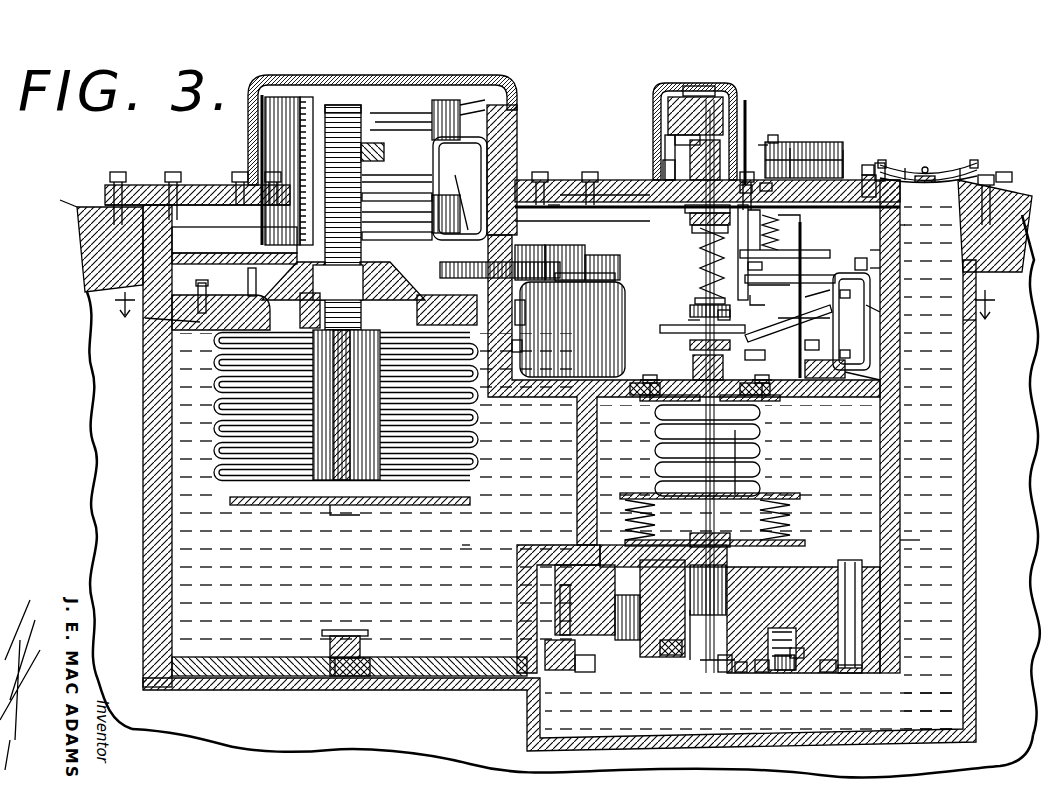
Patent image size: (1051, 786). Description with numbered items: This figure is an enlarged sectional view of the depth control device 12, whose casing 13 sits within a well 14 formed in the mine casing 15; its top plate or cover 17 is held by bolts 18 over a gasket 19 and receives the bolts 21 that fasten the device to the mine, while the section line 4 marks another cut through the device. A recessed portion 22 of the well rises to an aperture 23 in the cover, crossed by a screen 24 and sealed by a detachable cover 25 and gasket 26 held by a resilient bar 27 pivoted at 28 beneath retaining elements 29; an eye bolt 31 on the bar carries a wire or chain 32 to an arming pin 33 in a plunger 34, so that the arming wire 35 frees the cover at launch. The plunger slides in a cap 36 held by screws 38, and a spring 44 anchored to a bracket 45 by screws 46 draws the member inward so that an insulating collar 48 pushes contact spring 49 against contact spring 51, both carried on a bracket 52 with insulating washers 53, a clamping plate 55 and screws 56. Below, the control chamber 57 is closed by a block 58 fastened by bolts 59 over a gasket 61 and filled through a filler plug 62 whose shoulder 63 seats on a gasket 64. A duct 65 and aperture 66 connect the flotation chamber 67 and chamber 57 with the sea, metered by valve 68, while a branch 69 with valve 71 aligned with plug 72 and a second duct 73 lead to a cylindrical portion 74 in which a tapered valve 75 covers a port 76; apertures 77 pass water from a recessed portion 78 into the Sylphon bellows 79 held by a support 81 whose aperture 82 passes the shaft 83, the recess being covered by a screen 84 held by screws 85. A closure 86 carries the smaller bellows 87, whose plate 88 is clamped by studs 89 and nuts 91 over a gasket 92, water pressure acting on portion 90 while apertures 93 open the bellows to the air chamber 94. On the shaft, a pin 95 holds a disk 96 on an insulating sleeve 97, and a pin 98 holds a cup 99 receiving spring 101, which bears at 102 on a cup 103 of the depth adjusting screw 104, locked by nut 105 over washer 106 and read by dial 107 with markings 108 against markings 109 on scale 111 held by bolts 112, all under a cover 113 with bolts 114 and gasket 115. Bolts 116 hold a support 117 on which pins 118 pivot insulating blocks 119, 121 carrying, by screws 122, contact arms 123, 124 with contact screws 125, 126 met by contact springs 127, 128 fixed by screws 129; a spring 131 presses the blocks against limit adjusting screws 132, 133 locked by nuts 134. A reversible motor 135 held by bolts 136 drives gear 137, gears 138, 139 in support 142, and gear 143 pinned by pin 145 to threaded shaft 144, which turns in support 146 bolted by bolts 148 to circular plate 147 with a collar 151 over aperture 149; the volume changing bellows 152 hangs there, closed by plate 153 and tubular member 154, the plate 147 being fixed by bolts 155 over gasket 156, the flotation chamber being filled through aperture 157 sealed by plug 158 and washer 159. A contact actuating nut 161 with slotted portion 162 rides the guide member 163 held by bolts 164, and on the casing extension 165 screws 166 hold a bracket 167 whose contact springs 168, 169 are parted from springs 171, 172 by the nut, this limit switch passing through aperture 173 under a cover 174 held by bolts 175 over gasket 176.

The section line 4 is at (555, 295).
The depth control device 12 is at (179, 474).
The casing 13 is at (902, 496).
The well 14 is at (535, 702).
The mine casing 15 is at (87, 212).
The top plate or cover 17 is at (205, 185).
The bolts 18 is at (175, 172).
The gasket 19 is at (150, 185).
The bolts 21 is at (112, 160).
The recessed portion 22 is at (980, 683).
The aperture 23 is at (940, 168).
The screen or perforated plate 24 is at (905, 168).
The detachable cover 25 is at (960, 170).
The gasket 26 is at (1002, 172).
The resilient bar or clip 27 is at (962, 165).
The pivot 28 is at (925, 167).
The retaining elements 29 is at (882, 160).
The eye bolt 31 is at (880, 163).
The wire or chain 32 is at (845, 150).
The arming pin 33 is at (747, 172).
The plunger 34 is at (773, 135).
The arming wire 35 is at (760, 145).
The cap 36 is at (795, 142).
The screws 38 is at (818, 142).
The resilient spring 44 is at (748, 240).
The bracket 45 is at (700, 266).
The screws 46 is at (748, 222).
The disk or collar 48 is at (762, 178).
The contact spring 49 is at (792, 148).
The contact spring 51 is at (780, 232).
The bracket 52 is at (902, 228).
The insulating washers 53 is at (800, 232).
The clamping plate 55 is at (862, 178).
The screws 56 is at (880, 250).
The control chamber 57 is at (739, 475).
The block 58 is at (762, 673).
The bolts 59 is at (852, 675).
The gasket 61 is at (902, 545).
The filler plug 62 is at (828, 674).
The shoulder 63 is at (790, 672).
The gasket 64 is at (782, 640).
The duct 65 is at (555, 577).
The aperture 66 is at (545, 548).
The flotation chamber 67 is at (461, 537).
The adjustable screw or valve 68 is at (568, 674).
The branch 69 is at (576, 515).
The adjusting screw or valve 71 is at (640, 568).
The plug 72 is at (645, 674).
The second duct or branch 73 is at (698, 674).
The cylindrical portion 74 is at (765, 590).
The member or valve 75 is at (725, 674).
The port 76 is at (742, 674).
The apertures 77 is at (692, 675).
The recessed portion 78 is at (672, 675).
The Sylphon bellows 79 is at (795, 518).
The support 81 is at (760, 543).
The aperture 82 is at (692, 545).
The shaft or plunger 83 is at (760, 486).
The mesh or screen 84 is at (730, 680).
The screws 85 is at (585, 674).
The plate or closure 86 is at (800, 496).
The Sylphon bellows 87 is at (762, 445).
The support or plate 88 is at (666, 405).
The studs 89 is at (650, 375).
The portion of the closure 90 is at (668, 512).
The nuts 91 is at (648, 380).
The gasket 92 is at (760, 405).
The apertures 93 is at (703, 380).
The air chamber 94 is at (700, 252).
The pin 95 is at (690, 346).
The disk shaped member 96 is at (690, 320).
The insulating sleeve 97 is at (660, 330).
The pin 98 is at (690, 312).
The cup shaped member 99 is at (730, 315).
The spring 101 is at (700, 296).
The spring engagement 102 is at (692, 232).
The cup shaped member 103 is at (690, 222).
The depth adjusting screw 104 is at (705, 97).
The nut 105 is at (690, 155).
The washer or gasket 106 is at (685, 210).
The circular dial 107 is at (655, 98).
The indicia or scale markings 108 is at (745, 100).
The markings 109 is at (675, 138).
The scale 111 is at (665, 135).
The bolts 112 is at (663, 165).
The cover 113 is at (700, 86).
The bolts 114 is at (660, 170).
The gasket 115 is at (660, 178).
The bolts 116 is at (840, 368).
The bracket or support 117 is at (816, 398).
The pins 118 is at (778, 283).
The insulating block 119 is at (788, 258).
The insulating block 121 is at (981, 329).
The screws 122 is at (855, 262).
The contact arm 123 is at (748, 266).
The contact arm 124 is at (752, 365).
The adjustable contact screw 125 is at (750, 285).
The adjustable contact screw 126 is at (772, 334).
The contact spring 127 is at (758, 303).
The contact spring 128 is at (780, 318).
The screws 129 is at (812, 297).
The spring 131 is at (880, 312).
The control limit adjusting screw 132 is at (880, 268).
The control limit adjusting screw 133 is at (880, 380).
The nuts 134 is at (850, 294).
The reversible electric motor 135 is at (572, 329).
The bolts 136 is at (525, 312).
The gear 137 is at (600, 270).
The gear 138 is at (615, 277).
The gear 139 is at (566, 253).
The support 142 is at (545, 245).
The gear 143 is at (196, 250).
The threaded shaft 144 is at (361, 112).
The pin or bolt 145 is at (372, 238).
The support 146 is at (240, 292).
The circular plate 147 is at (270, 325).
The bolts 148 is at (246, 282).
The aperture 149 is at (417, 308).
The collar 151 is at (362, 285).
The Sylphon bellows 152 is at (478, 430).
The plate 153 is at (292, 505).
The tubular member 154 is at (360, 516).
The bolts 155 is at (204, 292).
The gasket 156 is at (145, 318).
The aperture 157 is at (364, 645).
The plug 158 is at (343, 690).
The washer 159 is at (368, 688).
The contact actuating nut 161 is at (385, 152).
The slotted portion 162 is at (345, 110).
The guide member 163 is at (307, 97).
The bolts 164 is at (265, 150).
The upwardly extending portion 165 is at (517, 138).
The screws 166 is at (472, 185).
The bracket 167 is at (475, 165).
The contact spring 168 is at (390, 113).
The contact spring 169 is at (374, 215).
The contact spring 171 is at (390, 131).
The contact spring 172 is at (410, 212).
The aperture 173 is at (372, 190).
The cover 174 is at (470, 75).
The bolts 175 is at (240, 172).
The gasket 176 is at (546, 185).